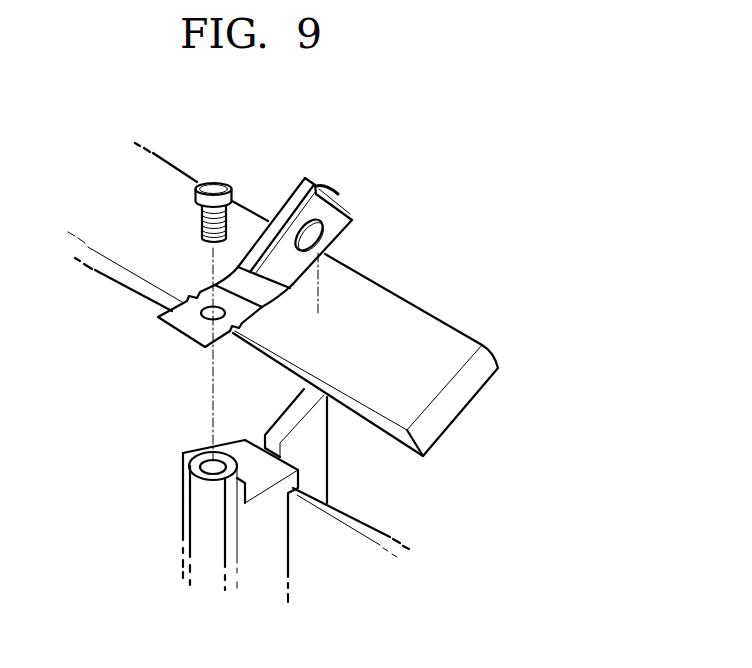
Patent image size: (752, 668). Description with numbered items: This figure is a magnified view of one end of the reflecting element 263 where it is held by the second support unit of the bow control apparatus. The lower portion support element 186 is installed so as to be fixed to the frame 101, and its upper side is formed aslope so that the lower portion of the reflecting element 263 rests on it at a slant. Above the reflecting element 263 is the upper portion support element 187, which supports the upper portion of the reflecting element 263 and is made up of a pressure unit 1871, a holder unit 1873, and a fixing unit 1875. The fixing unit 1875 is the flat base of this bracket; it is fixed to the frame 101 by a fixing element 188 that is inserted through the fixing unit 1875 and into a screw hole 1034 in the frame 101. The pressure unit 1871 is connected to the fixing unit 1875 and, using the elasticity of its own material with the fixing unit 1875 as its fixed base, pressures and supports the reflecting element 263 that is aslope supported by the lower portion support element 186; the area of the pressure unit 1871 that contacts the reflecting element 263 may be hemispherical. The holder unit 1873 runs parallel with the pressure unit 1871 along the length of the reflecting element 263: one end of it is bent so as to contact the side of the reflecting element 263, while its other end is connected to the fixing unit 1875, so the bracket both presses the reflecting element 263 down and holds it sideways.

The frame 101 is at (345, 572).
The reflecting element 263 is at (388, 305).
The lower portion support element 186 is at (280, 425).
The screw hole 1034 is at (203, 462).
The upper portion support element 187 is at (244, 233).
The pressure unit 1871 is at (340, 212).
The holder unit 1873 is at (310, 175).
The fixing unit 1875 is at (157, 304).
The fixing element 188 is at (213, 183).